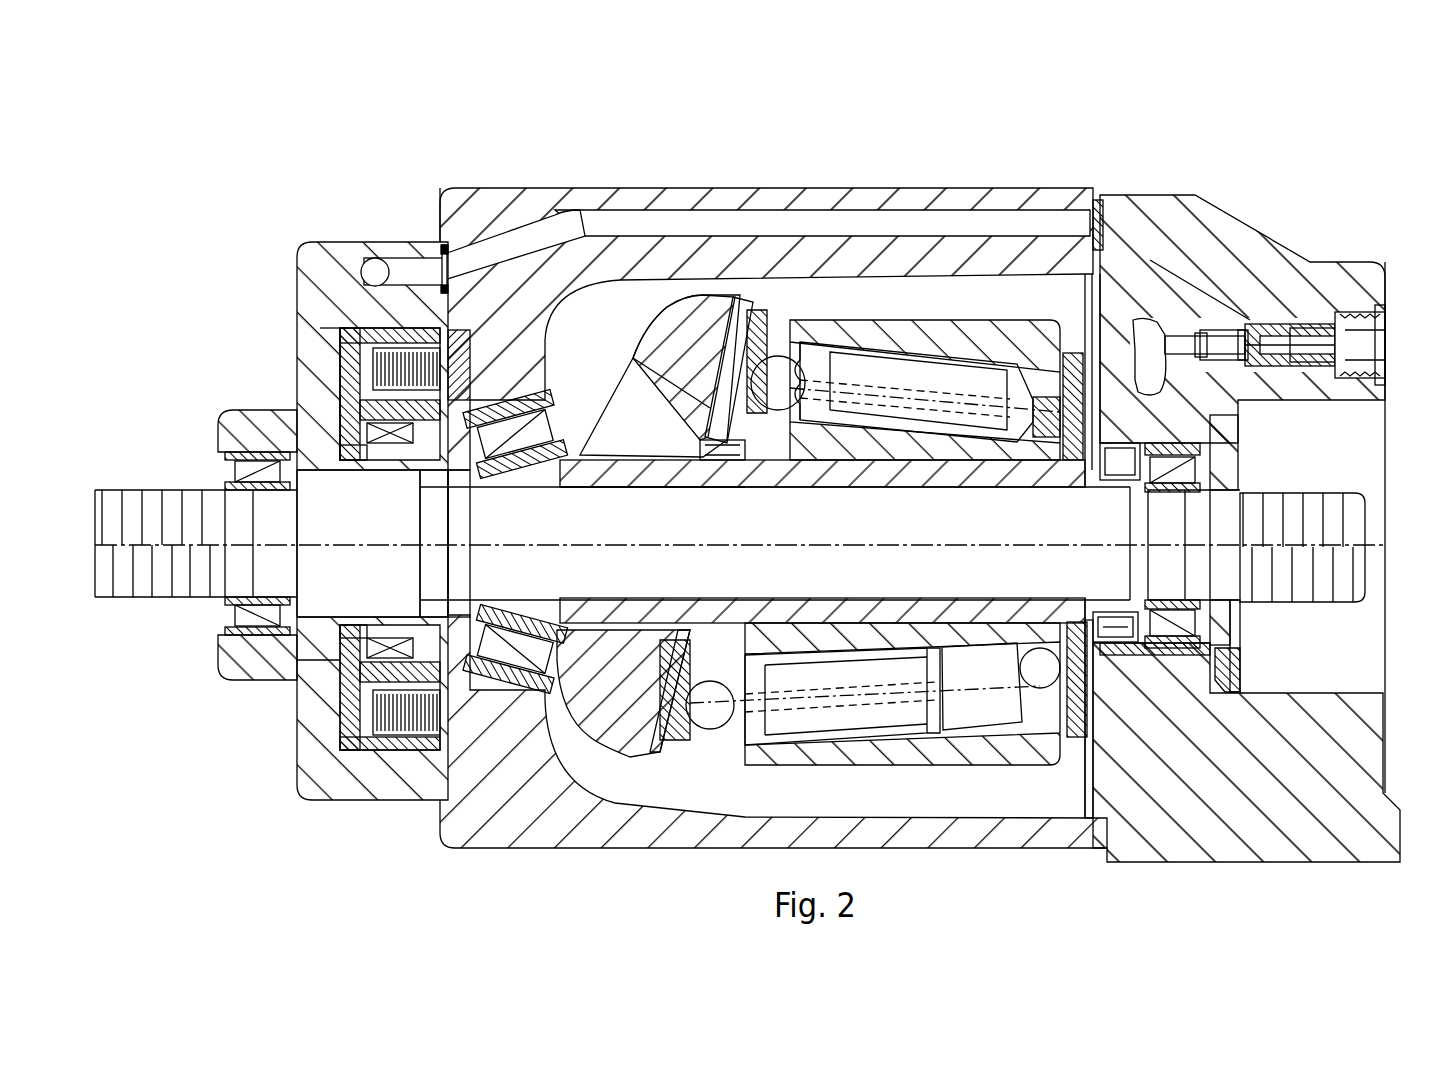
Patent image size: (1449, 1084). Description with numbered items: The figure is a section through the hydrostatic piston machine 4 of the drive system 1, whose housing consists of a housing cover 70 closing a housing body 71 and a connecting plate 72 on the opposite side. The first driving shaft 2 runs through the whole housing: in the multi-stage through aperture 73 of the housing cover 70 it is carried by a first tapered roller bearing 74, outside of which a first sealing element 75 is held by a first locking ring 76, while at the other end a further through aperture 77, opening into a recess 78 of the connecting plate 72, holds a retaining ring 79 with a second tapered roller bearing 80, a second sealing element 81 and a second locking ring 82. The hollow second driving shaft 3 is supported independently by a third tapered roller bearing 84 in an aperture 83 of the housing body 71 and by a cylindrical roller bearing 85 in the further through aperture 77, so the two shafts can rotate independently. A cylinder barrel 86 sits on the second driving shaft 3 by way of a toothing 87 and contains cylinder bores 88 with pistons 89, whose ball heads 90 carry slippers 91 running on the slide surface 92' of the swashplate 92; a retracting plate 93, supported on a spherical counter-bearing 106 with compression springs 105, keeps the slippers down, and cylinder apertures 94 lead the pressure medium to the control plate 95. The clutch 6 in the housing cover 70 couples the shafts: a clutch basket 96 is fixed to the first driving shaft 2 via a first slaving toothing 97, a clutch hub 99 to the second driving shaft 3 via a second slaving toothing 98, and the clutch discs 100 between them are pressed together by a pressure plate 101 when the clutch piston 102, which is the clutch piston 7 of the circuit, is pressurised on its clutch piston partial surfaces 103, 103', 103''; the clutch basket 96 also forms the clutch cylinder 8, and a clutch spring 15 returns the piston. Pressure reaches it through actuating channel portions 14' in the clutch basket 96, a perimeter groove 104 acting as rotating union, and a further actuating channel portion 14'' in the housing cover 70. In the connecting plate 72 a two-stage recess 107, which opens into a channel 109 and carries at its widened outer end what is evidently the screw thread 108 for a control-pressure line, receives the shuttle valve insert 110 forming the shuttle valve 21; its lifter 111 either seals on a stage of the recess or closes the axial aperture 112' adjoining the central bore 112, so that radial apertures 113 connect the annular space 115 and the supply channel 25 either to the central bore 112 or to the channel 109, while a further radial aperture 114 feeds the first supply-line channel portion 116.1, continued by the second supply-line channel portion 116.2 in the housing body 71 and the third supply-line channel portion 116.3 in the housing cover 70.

The drive system 1 is at (1390, 337).
The first driving shaft 2 is at (150, 585).
The second driving shaft 3 is at (880, 600).
The hydrostatic piston machine 4 is at (428, 165).
The clutch 6 is at (378, 322).
The clutch piston 7 is at (360, 622).
The clutch cylinder 8 is at (406, 712).
The actuating channel portions 14' is at (335, 600).
The further actuating channel portion 14'' is at (343, 687).
The clutch spring 15 is at (450, 703).
The shuttle valve 21 is at (1210, 318).
The supply channel 25 is at (1255, 348).
The housing cover 70 is at (228, 420).
The housing body 71 is at (676, 190).
The connecting plate 72 is at (1212, 213).
The through aperture 73 is at (240, 448).
The first tapered roller bearing 74 is at (300, 650).
The first sealing element 75 is at (240, 605).
The first locking ring 76 is at (225, 468).
The further through aperture 77 is at (1240, 660).
The recess 78 is at (1390, 690).
The retaining ring 79 is at (1240, 648).
The second tapered roller bearing 80 is at (1158, 648).
The second sealing element 81 is at (1232, 620).
The second locking ring 82 is at (1238, 468).
The aperture 83 is at (520, 400).
The third tapered roller bearing 84 is at (530, 475).
The cylindrical roller bearing 85 is at (1115, 640).
The cylinder barrel 86 is at (866, 452).
The toothing 87 is at (783, 462).
The cylinder bores 88 is at (958, 648).
The piston 89 is at (857, 727).
The ball head 90 is at (712, 735).
The slipper 91 is at (640, 740).
The swashplate 92 is at (646, 533).
The slide surface 92' is at (770, 346).
The retracting plate 93 is at (665, 760).
The cylinder apertures 94 is at (1030, 640).
The control plate 95 is at (1075, 745).
The clutch basket 96 is at (340, 370).
The first slaving toothing 97 is at (332, 465).
The second slaving toothing 98 is at (448, 470).
The clutch hub 99 is at (428, 465).
The clutch discs 100 is at (450, 370).
The pressure plate 101 is at (325, 300).
The clutch piston 102 is at (338, 322).
The clutch piston partial surface 103 is at (385, 473).
The clutch piston partial surface 103' is at (331, 397).
The clutch piston partial surface 103'' is at (315, 366).
The perimeter groove 104 is at (300, 675).
The compression springs 105 is at (710, 462).
The spherical counter-bearing 106 is at (675, 488).
The two-stage recess 107 is at (1165, 340).
The locking nut 108 is at (1385, 318).
The channel 109 is at (1140, 360).
The shuttle valve insert 110 is at (1385, 360).
The lifter 111 is at (1200, 362).
The central bore 112 is at (1291, 385).
The axial aperture 112' is at (1245, 308).
The radial apertures 113 is at (1232, 310).
The further radial aperture 114 is at (1300, 330).
The annular space 115 is at (1250, 395).
The first supply-line channel portion 116.1 is at (1128, 235).
The second supply-line channel portion 116.2 is at (812, 232).
The third supply-line channel portion 116.3 is at (408, 268).